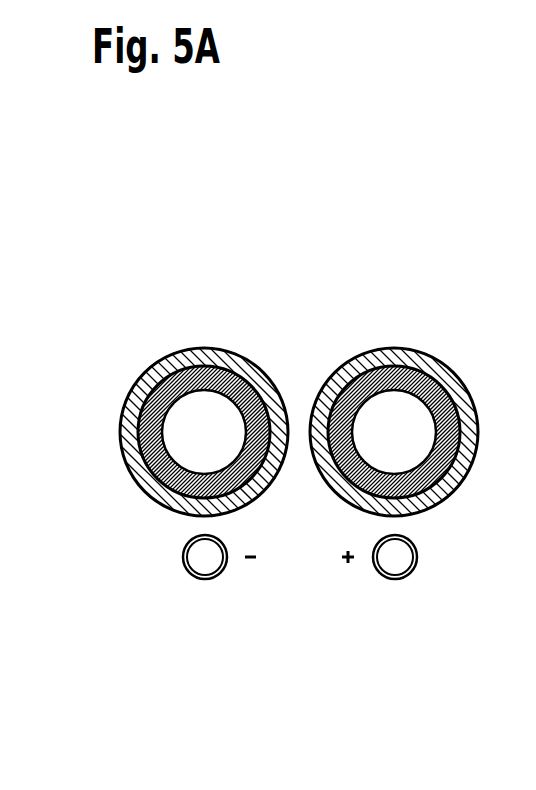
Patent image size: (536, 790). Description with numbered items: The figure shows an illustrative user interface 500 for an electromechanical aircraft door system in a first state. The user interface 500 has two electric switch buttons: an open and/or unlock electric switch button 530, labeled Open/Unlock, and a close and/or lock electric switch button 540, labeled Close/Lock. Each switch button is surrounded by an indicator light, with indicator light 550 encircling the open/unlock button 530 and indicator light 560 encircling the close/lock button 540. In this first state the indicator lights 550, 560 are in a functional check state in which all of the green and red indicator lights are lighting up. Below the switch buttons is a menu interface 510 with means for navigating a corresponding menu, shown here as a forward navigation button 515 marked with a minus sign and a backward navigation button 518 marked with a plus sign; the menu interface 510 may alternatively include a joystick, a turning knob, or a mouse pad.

The user interface 500 is at (302, 285).
The menu interface 510 is at (293, 607).
The forward navigation button 515 is at (202, 562).
The backward navigation button 518 is at (397, 562).
The open and/or unlock electric switch button 530 is at (210, 400).
The close and/or lock electric switch button 540 is at (390, 398).
The indicator light 550 is at (148, 362).
The indicator light 560 is at (443, 357).